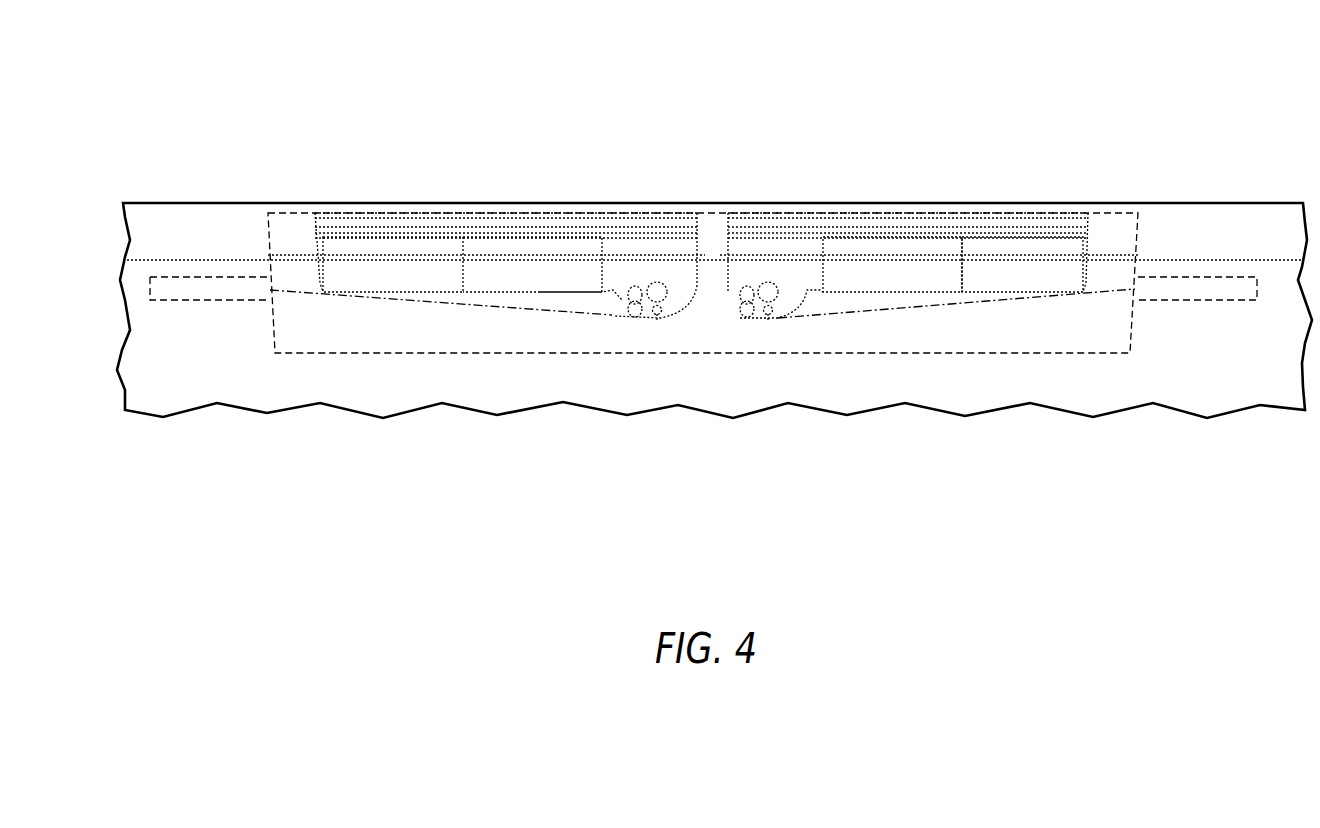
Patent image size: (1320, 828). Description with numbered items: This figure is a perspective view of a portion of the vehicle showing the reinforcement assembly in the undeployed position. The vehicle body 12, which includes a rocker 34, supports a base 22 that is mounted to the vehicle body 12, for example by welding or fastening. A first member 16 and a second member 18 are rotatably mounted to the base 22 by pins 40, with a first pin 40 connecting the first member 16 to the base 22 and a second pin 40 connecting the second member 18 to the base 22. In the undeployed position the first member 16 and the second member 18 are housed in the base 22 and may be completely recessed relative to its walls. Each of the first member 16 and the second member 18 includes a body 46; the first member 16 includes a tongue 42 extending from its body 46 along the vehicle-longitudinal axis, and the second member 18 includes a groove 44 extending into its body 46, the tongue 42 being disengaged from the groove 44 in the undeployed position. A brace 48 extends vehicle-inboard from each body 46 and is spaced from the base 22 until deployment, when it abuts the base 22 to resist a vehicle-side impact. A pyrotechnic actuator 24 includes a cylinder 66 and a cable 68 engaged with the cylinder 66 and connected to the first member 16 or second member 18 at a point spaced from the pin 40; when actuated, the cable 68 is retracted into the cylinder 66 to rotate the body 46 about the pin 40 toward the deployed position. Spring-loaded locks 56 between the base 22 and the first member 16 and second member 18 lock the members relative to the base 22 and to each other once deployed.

The vehicle body 12 is at (176, 165).
The rocker 34 is at (220, 222).
The base 22 is at (275, 353).
The pyrotechnic actuator 24 is at (230, 300).
The cylinder 66 is at (162, 300).
The second member 18 is at (543, 203).
The first member 16 is at (883, 215).
The groove 44 is at (407, 203).
The tongue 42 is at (1018, 218).
The body 46 is at (378, 268).
The brace 48 is at (520, 268).
The pin 40 is at (658, 282).
The spring-loaded lock 56 is at (623, 302).
The cable 68 is at (427, 302).